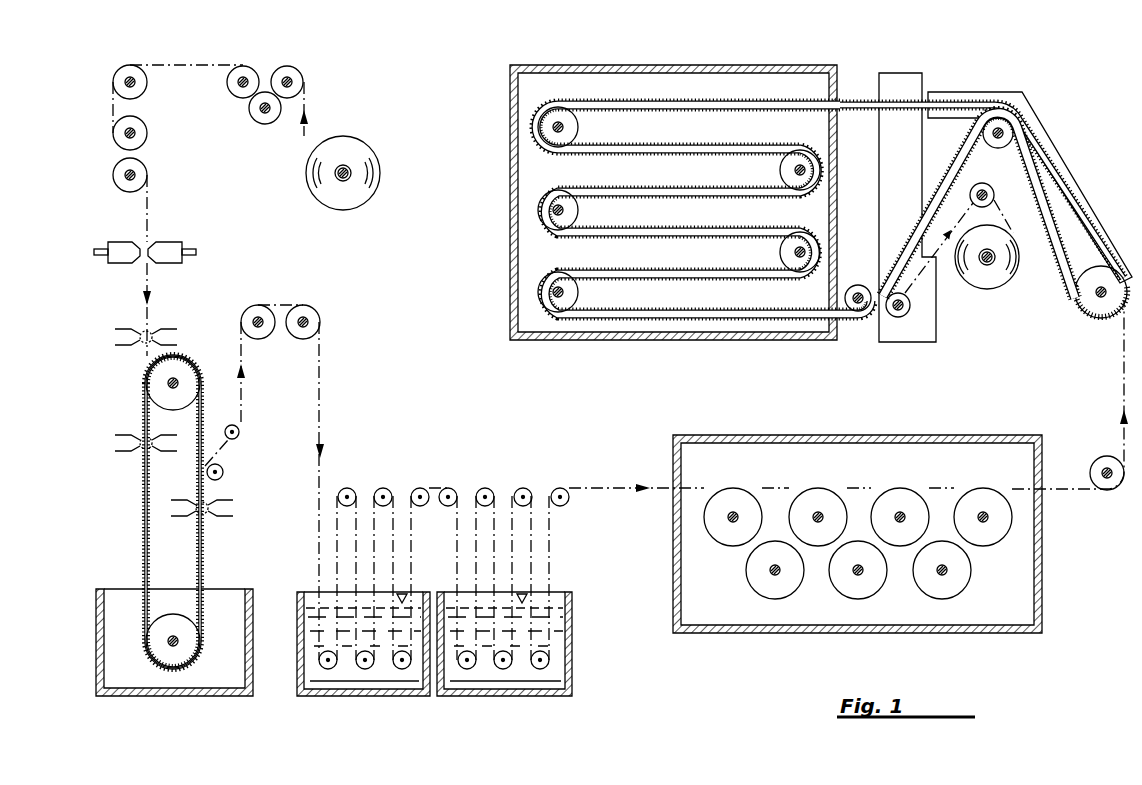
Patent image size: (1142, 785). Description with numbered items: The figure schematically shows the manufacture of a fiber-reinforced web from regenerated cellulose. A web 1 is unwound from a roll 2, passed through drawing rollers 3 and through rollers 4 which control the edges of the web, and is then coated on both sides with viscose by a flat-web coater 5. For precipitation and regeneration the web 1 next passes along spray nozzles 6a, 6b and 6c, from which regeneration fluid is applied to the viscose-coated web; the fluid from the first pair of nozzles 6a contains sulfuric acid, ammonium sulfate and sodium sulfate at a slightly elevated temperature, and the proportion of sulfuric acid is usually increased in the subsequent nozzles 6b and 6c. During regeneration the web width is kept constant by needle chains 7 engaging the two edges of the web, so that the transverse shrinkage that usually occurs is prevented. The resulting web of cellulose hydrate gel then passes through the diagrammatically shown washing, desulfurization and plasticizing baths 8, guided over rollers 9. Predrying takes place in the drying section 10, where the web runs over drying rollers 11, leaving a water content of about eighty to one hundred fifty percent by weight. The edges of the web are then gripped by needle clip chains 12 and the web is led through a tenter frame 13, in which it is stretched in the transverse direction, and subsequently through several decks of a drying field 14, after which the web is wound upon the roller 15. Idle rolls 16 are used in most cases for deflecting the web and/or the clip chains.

The web 1 is at (197, 64).
The roll 2 is at (371, 158).
The drawing rollers 3 is at (281, 68).
The rollers 4 is at (139, 168).
The flat-web coater 5 is at (159, 230).
The spray nozzles 6a is at (163, 319).
The spray nozzles 6b is at (137, 432).
The spray nozzles 6c is at (216, 526).
The needle chains 7 is at (203, 410).
The baths 8 is at (384, 684).
The rollers 9 is at (298, 336).
The drying section 10 is at (772, 620).
The drying rollers 11 is at (829, 500).
The needle clip chains 12 is at (1053, 237).
The tenter frame 13 is at (1101, 222).
The drying field 14 is at (648, 338).
The roller 15 is at (987, 290).
The idle rolls 16 is at (579, 127).